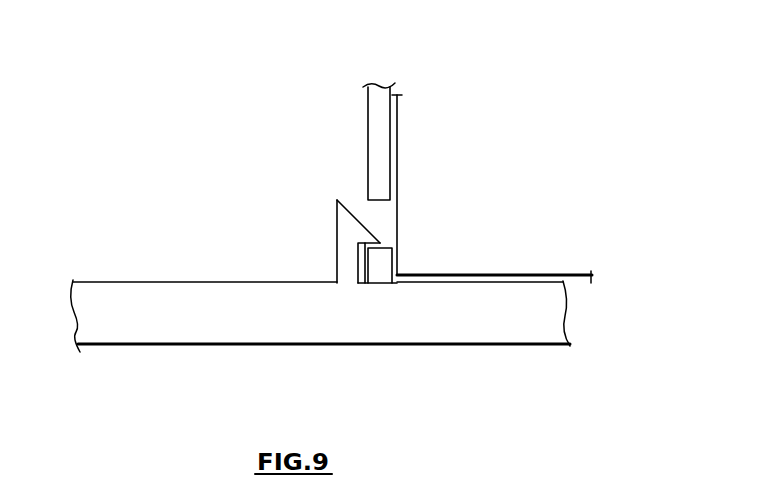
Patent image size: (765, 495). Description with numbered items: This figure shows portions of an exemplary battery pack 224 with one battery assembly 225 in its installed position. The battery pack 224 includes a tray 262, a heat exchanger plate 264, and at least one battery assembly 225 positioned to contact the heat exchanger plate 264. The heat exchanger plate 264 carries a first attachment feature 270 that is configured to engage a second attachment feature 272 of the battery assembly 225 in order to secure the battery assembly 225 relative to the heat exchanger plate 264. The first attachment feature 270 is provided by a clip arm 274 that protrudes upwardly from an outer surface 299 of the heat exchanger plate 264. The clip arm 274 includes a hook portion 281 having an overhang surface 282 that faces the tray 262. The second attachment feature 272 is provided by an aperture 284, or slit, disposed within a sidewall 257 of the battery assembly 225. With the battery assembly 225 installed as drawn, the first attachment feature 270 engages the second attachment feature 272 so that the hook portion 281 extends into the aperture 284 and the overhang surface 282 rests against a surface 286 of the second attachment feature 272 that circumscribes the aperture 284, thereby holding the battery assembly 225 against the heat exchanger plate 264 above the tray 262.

The battery pack 224 is at (477, 143).
The battery assembly 225 is at (497, 153).
The sidewall 257 is at (382, 118).
The tray 262 is at (329, 357).
The heat exchanger plate 264 is at (158, 327).
The first attachment feature 270 is at (345, 227).
The second attachment feature 272 is at (406, 195).
The clip arm 274 is at (345, 249).
The hook portion 281 is at (352, 216).
The overhang surface 282 is at (362, 285).
The aperture 284 is at (374, 219).
The surface 286 is at (385, 244).
The outer surface 299 is at (180, 282).